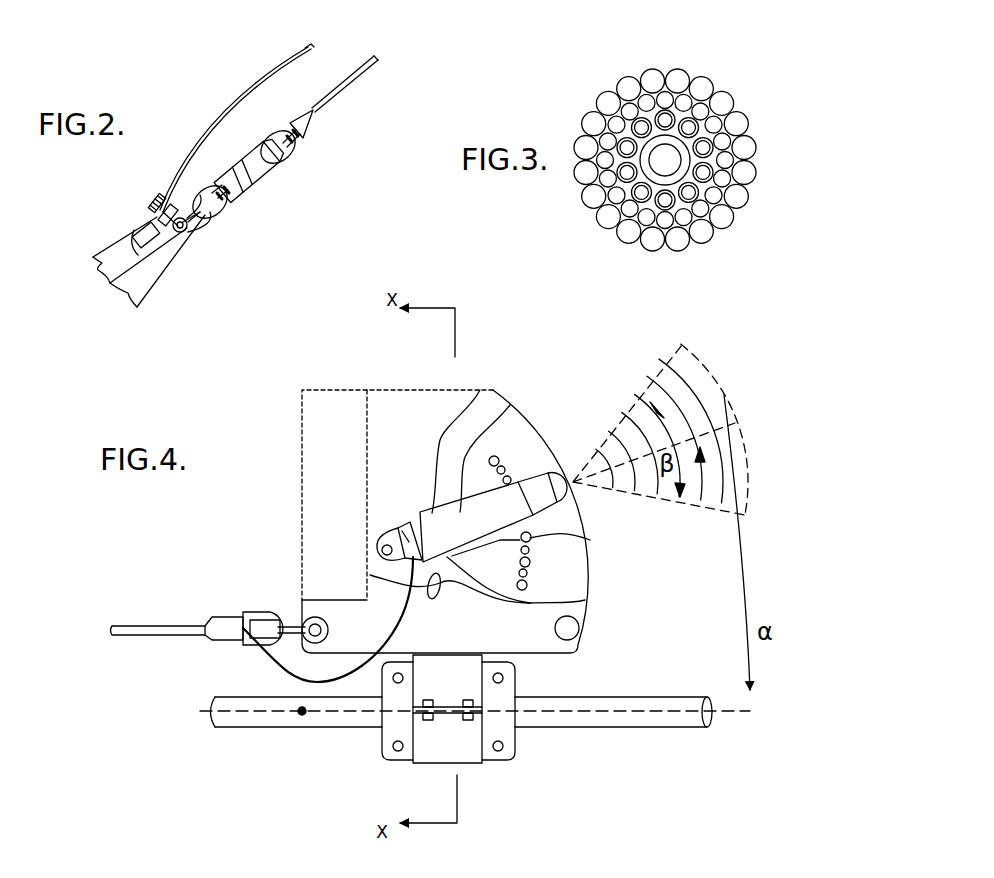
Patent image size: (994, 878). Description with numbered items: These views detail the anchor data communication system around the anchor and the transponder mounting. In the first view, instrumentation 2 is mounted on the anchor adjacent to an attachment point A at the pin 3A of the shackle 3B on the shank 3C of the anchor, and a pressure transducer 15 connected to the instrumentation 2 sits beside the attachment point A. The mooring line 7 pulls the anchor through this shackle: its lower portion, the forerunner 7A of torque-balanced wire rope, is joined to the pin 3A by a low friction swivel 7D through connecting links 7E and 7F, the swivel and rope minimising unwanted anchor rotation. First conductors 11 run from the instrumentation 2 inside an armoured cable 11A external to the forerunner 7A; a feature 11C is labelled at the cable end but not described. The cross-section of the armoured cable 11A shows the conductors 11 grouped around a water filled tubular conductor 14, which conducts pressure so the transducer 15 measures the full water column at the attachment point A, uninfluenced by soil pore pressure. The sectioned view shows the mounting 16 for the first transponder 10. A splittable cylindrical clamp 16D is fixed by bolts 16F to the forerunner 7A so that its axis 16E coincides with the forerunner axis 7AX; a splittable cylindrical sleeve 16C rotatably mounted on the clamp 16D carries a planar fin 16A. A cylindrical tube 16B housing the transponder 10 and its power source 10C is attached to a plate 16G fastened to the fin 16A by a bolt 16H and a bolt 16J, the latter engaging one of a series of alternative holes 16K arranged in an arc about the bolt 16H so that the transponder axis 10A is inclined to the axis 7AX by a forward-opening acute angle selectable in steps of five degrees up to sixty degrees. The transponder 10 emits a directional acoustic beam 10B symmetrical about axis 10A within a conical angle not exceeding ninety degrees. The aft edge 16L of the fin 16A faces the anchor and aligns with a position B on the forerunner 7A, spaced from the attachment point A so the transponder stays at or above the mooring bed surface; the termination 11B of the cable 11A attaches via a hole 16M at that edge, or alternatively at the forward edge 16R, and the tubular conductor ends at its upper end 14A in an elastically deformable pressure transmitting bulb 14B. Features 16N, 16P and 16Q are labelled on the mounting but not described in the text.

In FIG. 2, the instrumentation 2 is at (137, 242).
In FIG. 2, the pin 3A is at (183, 240).
In FIG. 2, the shackle 3B is at (203, 227).
In FIG. 2, the shank 3C is at (150, 283).
In FIG. 4, the mooring line 7 is at (660, 718).
In FIG. 2, the forerunner 7A is at (352, 85).
In FIG. 4, the forerunner 7A is at (615, 718).
In FIG. 4, the axis of forerunner 7AX is at (262, 712).
In FIG. 2, the low friction swivel 7D is at (250, 193).
In FIG. 2, the connecting link 7E is at (220, 213).
In FIG. 2, the connecting link 7F is at (278, 158).
In FIG. 4, the first transponder 10 is at (535, 490).
In FIG. 4, the axis of first transponder 10A is at (723, 424).
In FIG. 4, the directional acoustic beam 10B is at (703, 467).
In FIG. 4, the power source 10C is at (403, 528).
In FIG. 2, the first conductors 11 is at (146, 212).
In FIG. 3, the first conductors 11 is at (641, 124).
In FIG. 4, the first conductors 11 is at (365, 575).
In FIG. 2, the armoured cable 11A is at (208, 130).
In FIG. 3, the armoured cable 11A is at (551, 129).
In FIG. 4, the armoured cable 11A is at (165, 628).
In FIG. 4, the termination 11B is at (215, 628).
In FIG. 2, the wire terminal 11C is at (157, 198).
In FIG. 3, the water filled tubular conductor 14 is at (688, 164).
In FIG. 4, the upper end 14A is at (300, 677).
In FIG. 4, the pressure transmitting bulb 14B is at (537, 655).
In FIG. 2, the pressure transducer 15 is at (173, 205).
In FIG. 4, the mounting 16 is at (590, 378).
In FIG. 4, the planar fin 16A is at (417, 410).
In FIG. 4, the cylindrical tube 16B is at (510, 405).
In FIG. 4, the splittable cylindrical sleeve 16C is at (443, 763).
In FIG. 4, the splittable cylindrical clamp 16D is at (505, 755).
In FIG. 4, the axis 16E is at (385, 735).
In FIG. 4, the bolts 16F is at (396, 750).
In FIG. 4, the plate 16G is at (575, 601).
In FIG. 4, the bolt 16H is at (382, 548).
In FIG. 4, the bolt 16J is at (586, 537).
In FIG. 4, the alternative holes 16K is at (505, 467).
In FIG. 4, the aft edge 16L is at (300, 608).
In FIG. 4, the hole 16M is at (328, 617).
In FIG. 4, the housing inner box 16N is at (323, 473).
In FIG. 4, the clamp bolt 16P is at (469, 721).
In FIG. 4, the housing corner 16Q is at (585, 646).
In FIG. 4, the forward edge 16R is at (580, 628).
In FIG. 2, the attachment point A is at (182, 215).
In FIG. 4, the position B is at (302, 722).